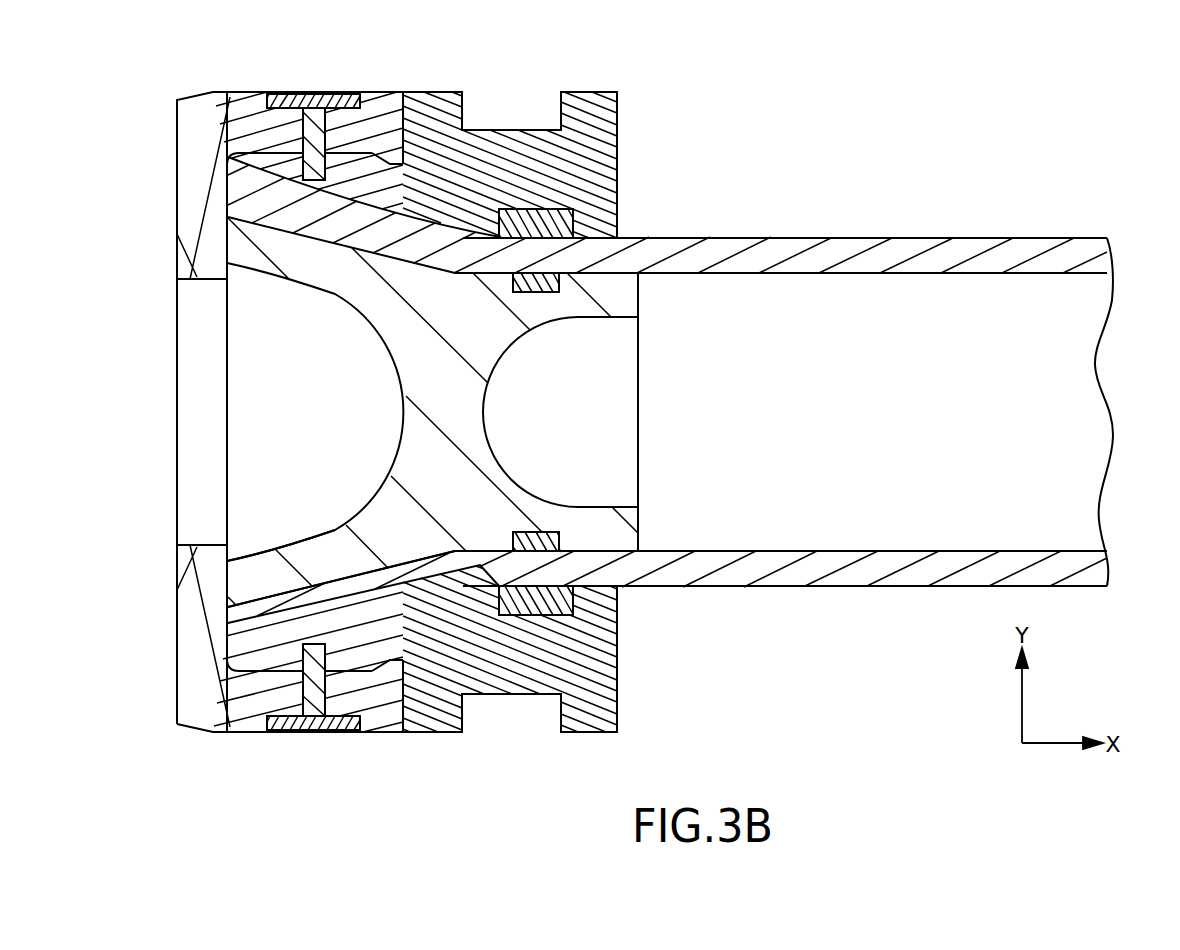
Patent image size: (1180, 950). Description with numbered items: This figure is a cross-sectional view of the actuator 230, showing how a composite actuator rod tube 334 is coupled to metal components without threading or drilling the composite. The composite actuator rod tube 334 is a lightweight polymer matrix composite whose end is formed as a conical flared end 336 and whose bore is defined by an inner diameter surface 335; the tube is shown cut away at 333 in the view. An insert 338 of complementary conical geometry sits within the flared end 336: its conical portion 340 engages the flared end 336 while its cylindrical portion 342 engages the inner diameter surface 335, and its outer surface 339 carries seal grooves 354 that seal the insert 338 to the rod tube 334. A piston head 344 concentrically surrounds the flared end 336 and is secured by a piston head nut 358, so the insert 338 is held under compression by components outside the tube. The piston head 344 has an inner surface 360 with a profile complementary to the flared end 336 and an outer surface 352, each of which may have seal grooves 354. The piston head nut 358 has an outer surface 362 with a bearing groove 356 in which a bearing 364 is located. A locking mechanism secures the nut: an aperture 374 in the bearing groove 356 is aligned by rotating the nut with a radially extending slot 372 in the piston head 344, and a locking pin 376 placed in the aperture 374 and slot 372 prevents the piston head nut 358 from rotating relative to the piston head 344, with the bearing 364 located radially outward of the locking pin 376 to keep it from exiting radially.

The actuator 230 is at (990, 95).
The tube 333 is at (1050, 249).
The composite actuator rod tube 334 is at (950, 237).
The inner diameter surface 335 is at (1055, 273).
The flared end 336 is at (363, 213).
The insert 338 is at (593, 522).
The outer surface 339 is at (393, 563).
The conical portion 340 is at (260, 585).
The cylindrical portion 342 is at (600, 290).
The piston head 344 is at (443, 92).
The outer surface 352 is at (571, 92).
The seal grooves 354 is at (537, 537).
The bearing groove 356 is at (289, 108).
The piston head nut 358 is at (177, 129).
The inner surface 360 is at (387, 221).
The outer surface 362 is at (257, 93).
The bearing 364 is at (342, 92).
The slot 372 is at (303, 167).
The aperture 374 is at (303, 127).
The locking pin 376 is at (313, 143).